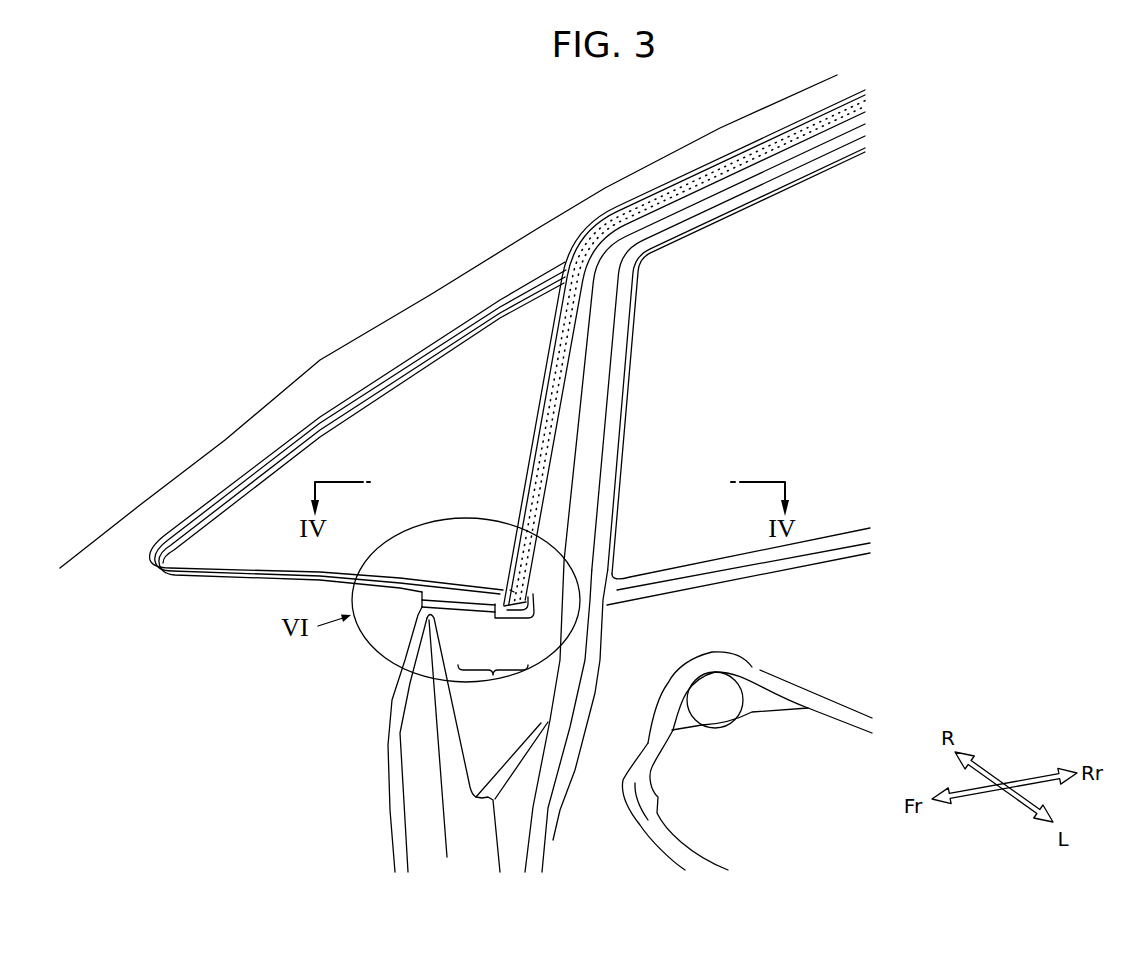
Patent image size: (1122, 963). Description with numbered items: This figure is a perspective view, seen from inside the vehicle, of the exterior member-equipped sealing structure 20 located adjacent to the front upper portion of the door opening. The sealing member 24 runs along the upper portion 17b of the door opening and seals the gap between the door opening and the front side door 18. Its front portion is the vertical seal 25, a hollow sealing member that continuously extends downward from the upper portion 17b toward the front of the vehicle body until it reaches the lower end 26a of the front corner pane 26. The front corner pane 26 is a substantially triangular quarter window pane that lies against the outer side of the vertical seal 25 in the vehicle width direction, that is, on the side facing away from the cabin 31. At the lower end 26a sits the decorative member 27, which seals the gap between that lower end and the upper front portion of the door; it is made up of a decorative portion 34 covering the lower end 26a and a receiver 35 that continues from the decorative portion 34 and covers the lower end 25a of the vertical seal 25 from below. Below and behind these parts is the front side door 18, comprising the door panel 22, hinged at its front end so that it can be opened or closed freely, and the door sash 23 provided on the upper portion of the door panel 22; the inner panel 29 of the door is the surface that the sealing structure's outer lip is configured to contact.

The upper portion of the door opening 17b is at (783, 115).
The exterior member-equipped sealing structure 20 is at (383, 362).
The front corner pane 26 is at (377, 437).
The lower end of the front corner pane 26a is at (405, 577).
The decorative portion 34 is at (457, 607).
The receiver 35 is at (509, 614).
The decorative member 27 is at (493, 685).
The vertical seal 25 is at (553, 415).
The sealing member 24 is at (717, 170).
The lower end of the vertical seal 25a is at (528, 572).
The door sash 23 is at (622, 338).
The cabin 31 is at (872, 625).
The inner panel 29 is at (522, 727).
The front side door 18 is at (380, 771).
The door panel 22 is at (412, 807).